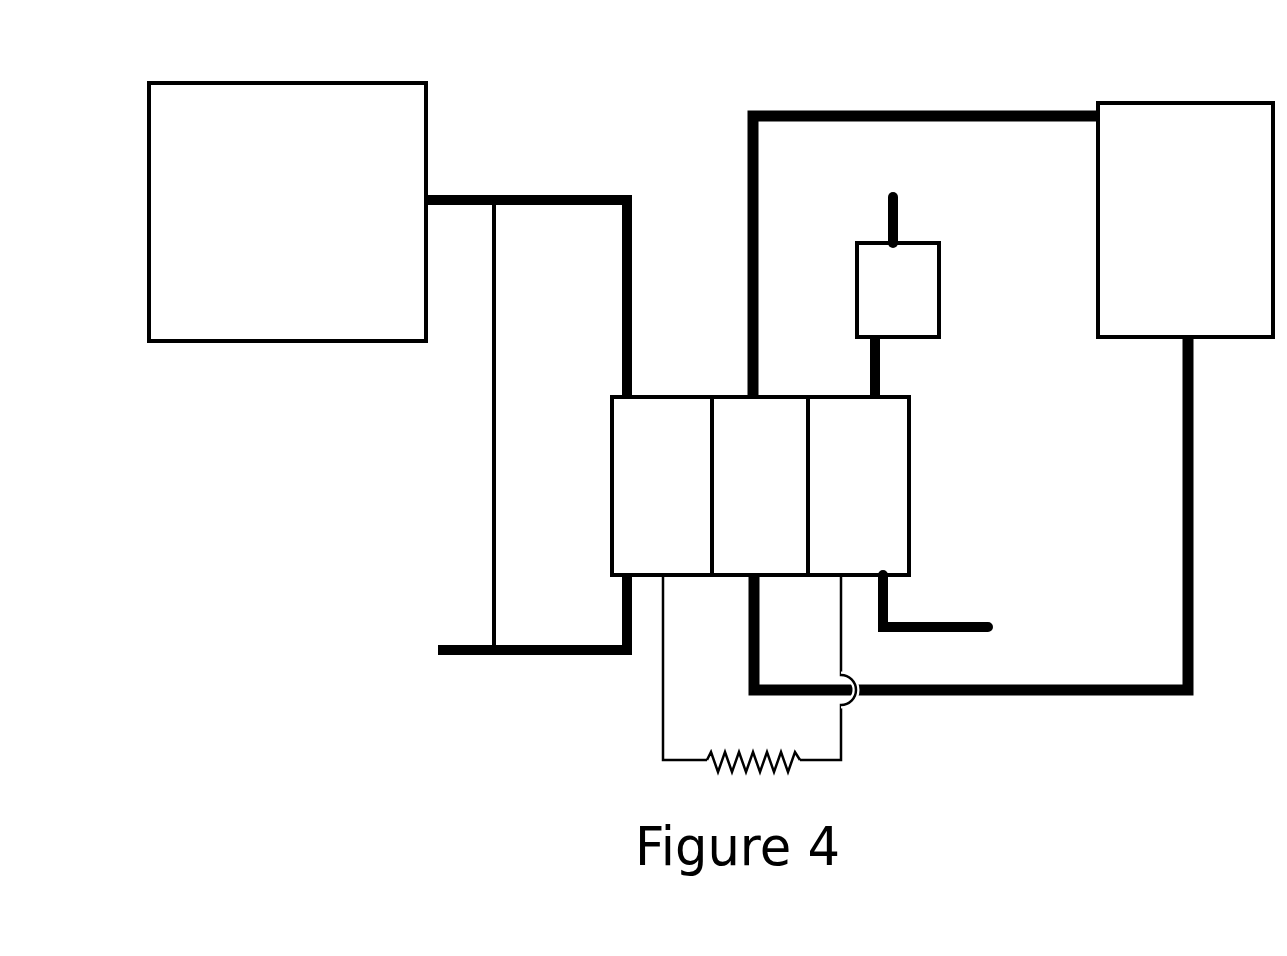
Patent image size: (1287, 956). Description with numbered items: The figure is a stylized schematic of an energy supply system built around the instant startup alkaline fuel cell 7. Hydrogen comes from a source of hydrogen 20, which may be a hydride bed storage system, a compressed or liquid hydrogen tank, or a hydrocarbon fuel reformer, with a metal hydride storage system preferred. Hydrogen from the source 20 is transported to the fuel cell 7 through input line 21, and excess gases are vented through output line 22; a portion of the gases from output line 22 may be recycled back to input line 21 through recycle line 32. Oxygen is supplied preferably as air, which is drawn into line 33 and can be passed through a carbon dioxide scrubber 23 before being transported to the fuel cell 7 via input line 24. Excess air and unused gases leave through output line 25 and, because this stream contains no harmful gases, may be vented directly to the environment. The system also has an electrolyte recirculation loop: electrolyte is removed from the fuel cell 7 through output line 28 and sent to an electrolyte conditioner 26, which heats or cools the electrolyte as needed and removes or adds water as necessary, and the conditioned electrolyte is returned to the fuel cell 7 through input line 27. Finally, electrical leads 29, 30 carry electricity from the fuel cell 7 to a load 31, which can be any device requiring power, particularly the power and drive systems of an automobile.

The alkaline fuel cell 7 is at (760, 486).
The source of hydrogen 20 is at (287, 212).
The input line 21 is at (571, 194).
The output line 22 is at (552, 640).
The carbon dioxide scrubber 23 is at (898, 290).
The input line 24 is at (883, 372).
The output line 25 is at (975, 608).
The electrolyte conditioner 26 is at (1185, 220).
The input line 27 is at (915, 108).
The output line 28 is at (1102, 680).
The electrical lead 29 is at (661, 734).
The electrical lead 30 is at (1000, 758).
The load 31 is at (753, 744).
The recycle line 32 is at (498, 302).
The line 33 is at (901, 216).